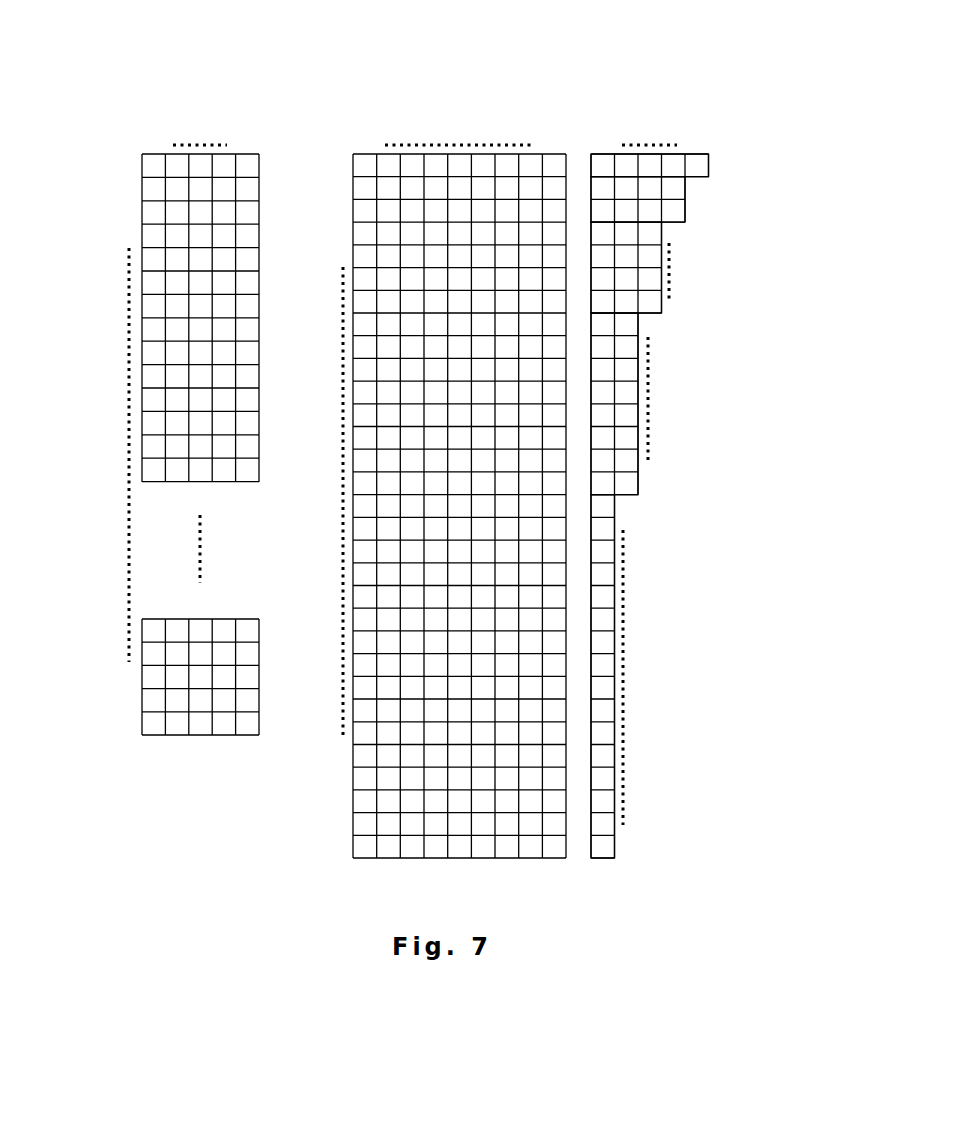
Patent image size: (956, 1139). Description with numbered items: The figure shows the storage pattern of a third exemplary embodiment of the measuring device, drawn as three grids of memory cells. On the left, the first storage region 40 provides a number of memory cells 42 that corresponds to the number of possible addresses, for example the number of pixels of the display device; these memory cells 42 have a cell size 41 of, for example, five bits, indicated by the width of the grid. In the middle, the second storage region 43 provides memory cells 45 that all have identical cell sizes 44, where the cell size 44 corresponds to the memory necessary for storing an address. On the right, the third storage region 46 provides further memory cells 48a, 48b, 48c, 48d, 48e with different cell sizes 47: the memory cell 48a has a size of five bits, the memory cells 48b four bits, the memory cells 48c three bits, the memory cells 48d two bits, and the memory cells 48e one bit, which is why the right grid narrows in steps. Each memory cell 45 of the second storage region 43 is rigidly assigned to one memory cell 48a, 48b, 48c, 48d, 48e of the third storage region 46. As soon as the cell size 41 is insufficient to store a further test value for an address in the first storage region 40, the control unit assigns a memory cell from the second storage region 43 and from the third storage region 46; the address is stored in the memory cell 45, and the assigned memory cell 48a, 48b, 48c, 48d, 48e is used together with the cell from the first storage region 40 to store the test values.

The first storage region 40 is at (115, 88).
The cell size 41 is at (252, 153).
The memory cells 42 is at (140, 723).
The second storage region 43 is at (335, 117).
The cell sizes 44 is at (553, 153).
The memory cells 45 is at (353, 858).
The third storage region 46 is at (577, 123).
The cell sizes 47 is at (698, 153).
The memory cell 48a is at (710, 165).
The memory cells 48b is at (685, 188).
The memory cells 48c is at (661, 240).
The memory cells 48d is at (638, 323).
The memory cells 48e is at (614, 507).